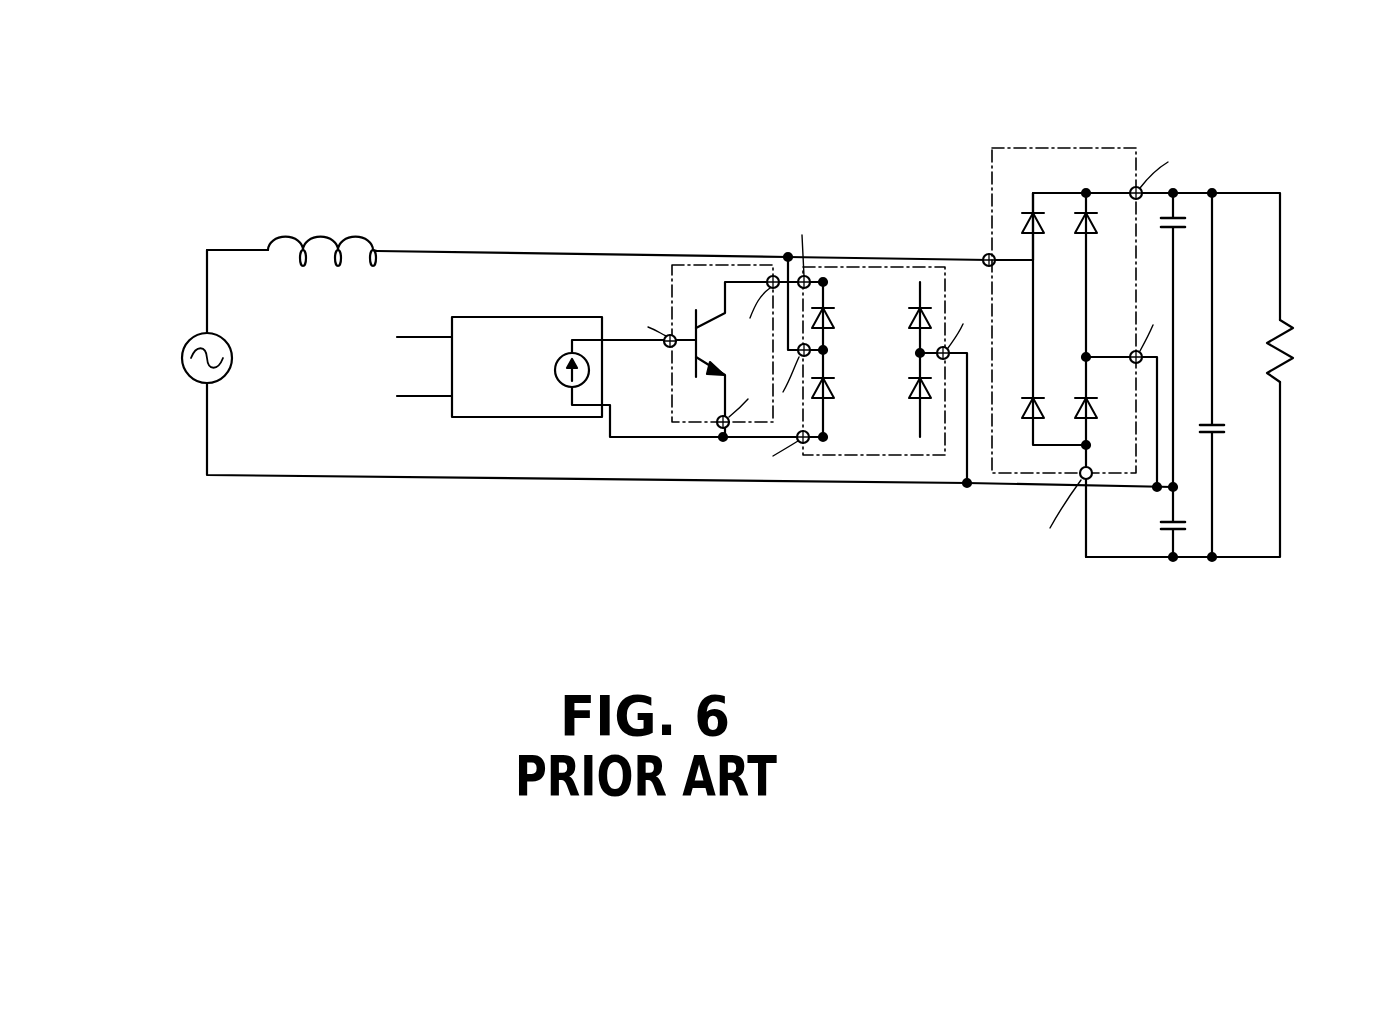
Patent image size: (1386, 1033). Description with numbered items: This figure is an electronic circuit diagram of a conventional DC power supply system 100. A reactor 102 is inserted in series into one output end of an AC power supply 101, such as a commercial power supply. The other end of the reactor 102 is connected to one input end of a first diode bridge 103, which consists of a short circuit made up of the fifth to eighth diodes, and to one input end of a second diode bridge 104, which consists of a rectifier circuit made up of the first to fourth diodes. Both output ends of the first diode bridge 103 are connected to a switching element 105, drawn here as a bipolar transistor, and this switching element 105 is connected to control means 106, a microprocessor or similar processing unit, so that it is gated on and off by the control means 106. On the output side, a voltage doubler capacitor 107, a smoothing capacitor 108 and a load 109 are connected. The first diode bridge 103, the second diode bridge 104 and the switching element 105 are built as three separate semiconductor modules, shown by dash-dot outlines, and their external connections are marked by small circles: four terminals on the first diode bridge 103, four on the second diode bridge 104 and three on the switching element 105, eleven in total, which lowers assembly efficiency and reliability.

The DC power supply system 100 is at (1116, 103).
The AC power supply 101 is at (185, 342).
The reactor 102 is at (338, 242).
The first diode bridge 103 is at (863, 265).
The second diode bridge 104 is at (1062, 105).
The switching element 105 is at (715, 260).
The control means 106 is at (470, 316).
The voltage doubler capacitor 107 is at (1195, 218).
The smoothing capacitor 108 is at (1218, 436).
The load 109 is at (1300, 345).